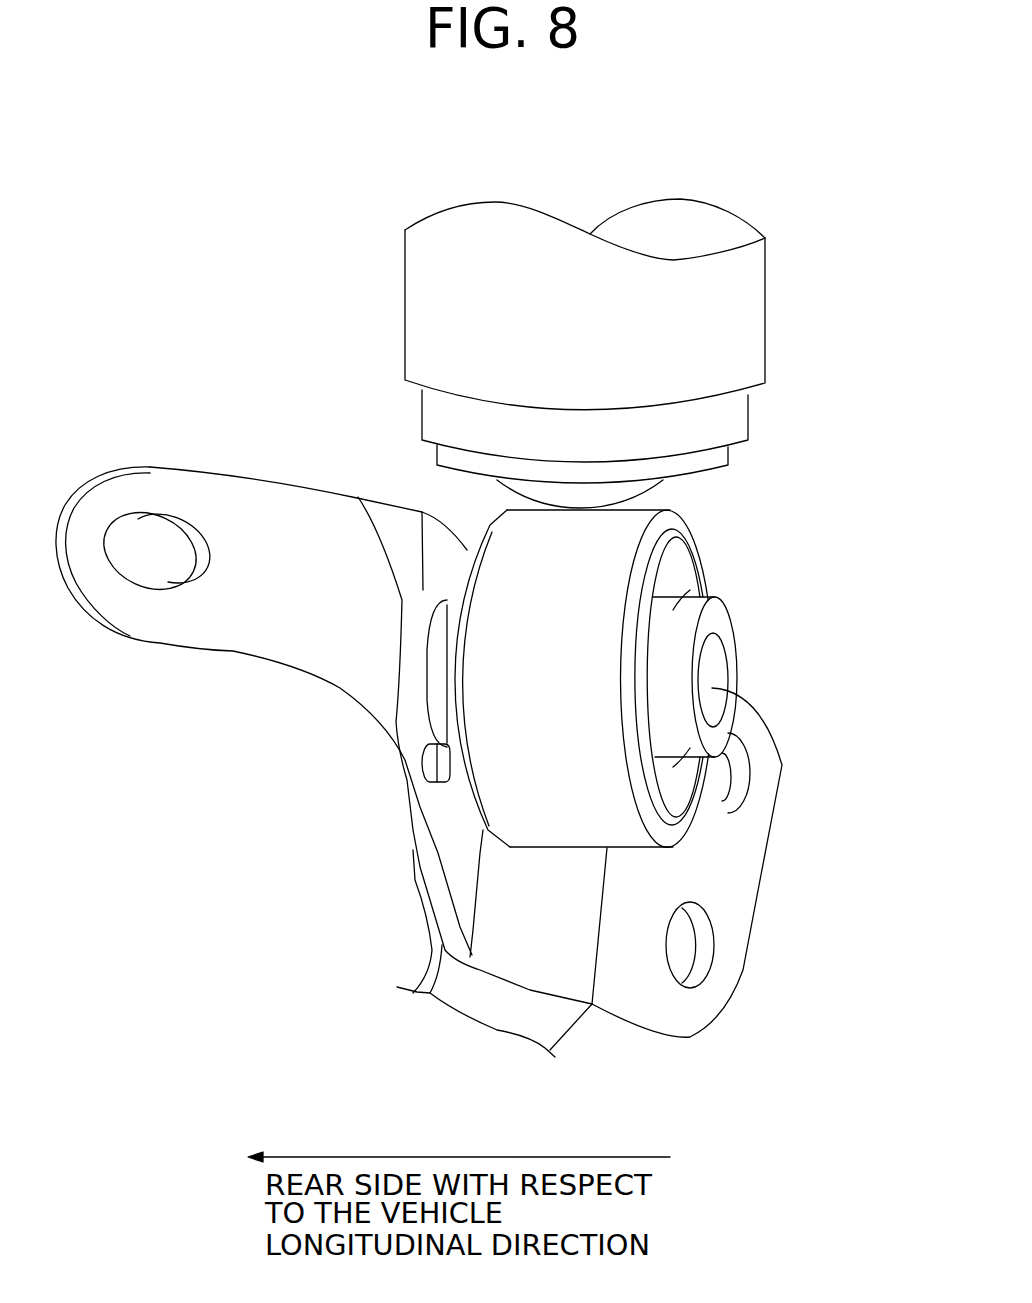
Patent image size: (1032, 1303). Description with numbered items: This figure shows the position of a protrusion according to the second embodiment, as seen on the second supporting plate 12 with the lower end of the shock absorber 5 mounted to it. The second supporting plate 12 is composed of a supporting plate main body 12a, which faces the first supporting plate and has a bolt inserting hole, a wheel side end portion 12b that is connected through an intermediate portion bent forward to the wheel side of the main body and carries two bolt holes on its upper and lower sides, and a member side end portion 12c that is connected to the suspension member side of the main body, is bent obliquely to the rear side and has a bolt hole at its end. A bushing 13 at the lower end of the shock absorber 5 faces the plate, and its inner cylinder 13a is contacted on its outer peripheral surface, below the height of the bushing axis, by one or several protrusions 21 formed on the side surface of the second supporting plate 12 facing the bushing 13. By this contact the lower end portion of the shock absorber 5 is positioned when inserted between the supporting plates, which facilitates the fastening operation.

The shock absorber 5 is at (753, 308).
The second supporting plate 12 is at (310, 466).
The supporting plate main body 12a is at (445, 540).
The wheel side end portion 12b is at (743, 877).
The member side end portion 12c is at (267, 623).
The bushing 13 is at (669, 659).
The inner cylinder 13a is at (712, 584).
The protrusion 21 is at (422, 762).